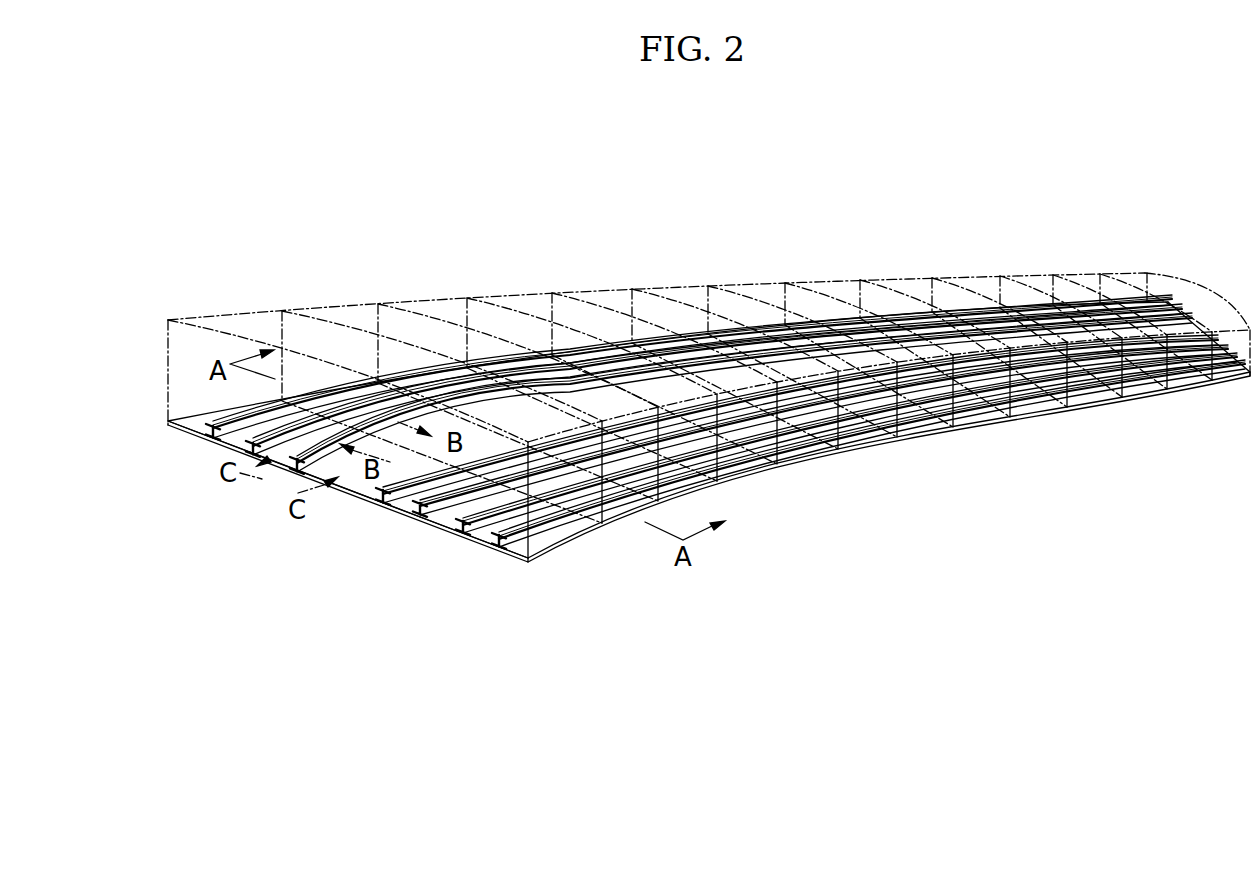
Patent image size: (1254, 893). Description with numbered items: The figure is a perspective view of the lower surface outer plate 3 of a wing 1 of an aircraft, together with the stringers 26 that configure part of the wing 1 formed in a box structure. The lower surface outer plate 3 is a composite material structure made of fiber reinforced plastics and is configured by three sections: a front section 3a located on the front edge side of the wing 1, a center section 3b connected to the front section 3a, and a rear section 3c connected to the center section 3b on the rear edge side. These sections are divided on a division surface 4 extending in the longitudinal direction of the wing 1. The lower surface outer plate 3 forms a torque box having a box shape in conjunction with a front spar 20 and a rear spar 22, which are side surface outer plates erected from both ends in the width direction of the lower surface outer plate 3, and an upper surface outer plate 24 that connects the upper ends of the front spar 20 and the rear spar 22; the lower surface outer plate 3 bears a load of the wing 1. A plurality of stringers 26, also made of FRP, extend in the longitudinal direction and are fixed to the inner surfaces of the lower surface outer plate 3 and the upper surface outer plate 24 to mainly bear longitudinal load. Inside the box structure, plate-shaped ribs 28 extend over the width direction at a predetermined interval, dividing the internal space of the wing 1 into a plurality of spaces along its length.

The wing 1 is at (585, 242).
The lower surface outer plate 3 is at (682, 482).
The front section 3a is at (183, 432).
The center section 3b is at (353, 494).
The rear section 3c is at (467, 537).
The division surface 4 is at (284, 474).
The front spar 20 is at (165, 351).
The rear spar 22 is at (575, 527).
The upper surface outer plate 24 is at (257, 318).
The stringers 26 is at (391, 492).
The ribs 28 is at (334, 327).